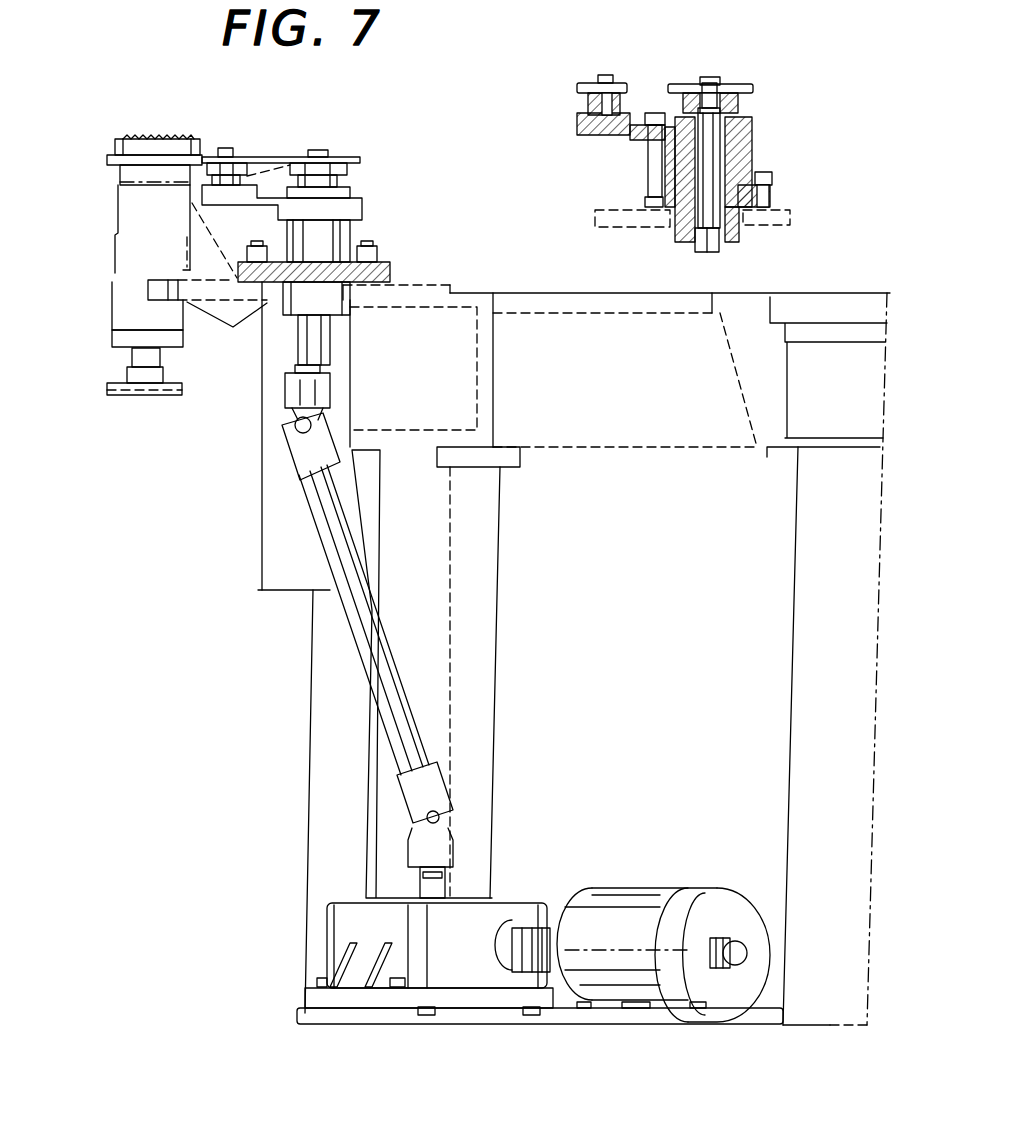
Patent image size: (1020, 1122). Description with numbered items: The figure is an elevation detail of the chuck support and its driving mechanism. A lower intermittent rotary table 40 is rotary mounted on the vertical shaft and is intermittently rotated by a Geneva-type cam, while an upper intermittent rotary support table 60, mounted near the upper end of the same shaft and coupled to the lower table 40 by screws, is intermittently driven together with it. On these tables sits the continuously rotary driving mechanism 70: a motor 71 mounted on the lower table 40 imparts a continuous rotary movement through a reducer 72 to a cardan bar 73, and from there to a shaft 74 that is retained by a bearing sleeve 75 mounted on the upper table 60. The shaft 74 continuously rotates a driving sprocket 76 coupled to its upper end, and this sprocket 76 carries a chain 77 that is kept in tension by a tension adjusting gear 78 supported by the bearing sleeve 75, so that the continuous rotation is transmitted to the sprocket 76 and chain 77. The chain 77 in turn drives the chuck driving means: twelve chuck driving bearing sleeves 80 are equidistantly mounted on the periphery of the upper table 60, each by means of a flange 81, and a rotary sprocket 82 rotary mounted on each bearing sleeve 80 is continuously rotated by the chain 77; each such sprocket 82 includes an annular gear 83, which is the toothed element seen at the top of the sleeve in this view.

The lower intermittent rotary table 40 is at (628, 1025).
The upper intermittent rotary support table 60 is at (518, 293).
The continuously rotary driving mechanism 70 is at (419, 188).
The motor 71 is at (637, 902).
The reducer 72 is at (327, 935).
The cardan bar 73 is at (381, 630).
The shaft 74 is at (325, 335).
The bearing sleeve 75 is at (345, 232).
The driving sprocket 76 is at (340, 162).
The chain 77 is at (270, 156).
The tension adjusting gear 78 is at (632, 83).
The chuck driving bearing sleeve 80 is at (110, 210).
The flange 81 is at (223, 224).
The rotary sprocket 82 is at (105, 156).
The annular gear 83 is at (160, 135).